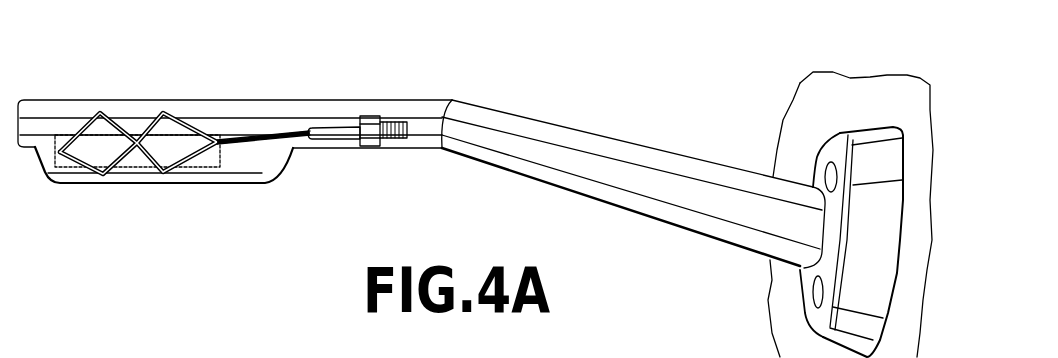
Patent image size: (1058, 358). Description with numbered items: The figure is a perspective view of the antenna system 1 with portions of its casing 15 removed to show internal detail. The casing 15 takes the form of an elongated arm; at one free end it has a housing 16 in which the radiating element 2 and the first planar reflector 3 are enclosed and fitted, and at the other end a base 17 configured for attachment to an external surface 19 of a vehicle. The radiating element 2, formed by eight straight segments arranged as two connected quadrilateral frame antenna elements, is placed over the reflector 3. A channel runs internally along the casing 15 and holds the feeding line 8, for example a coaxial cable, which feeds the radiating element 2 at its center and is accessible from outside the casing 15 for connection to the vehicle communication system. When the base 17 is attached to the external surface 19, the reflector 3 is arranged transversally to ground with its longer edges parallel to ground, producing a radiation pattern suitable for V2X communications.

The antenna system 1 is at (277, 229).
The radiating element 2 is at (100, 112).
The first planar reflector 3 is at (97, 150).
The feeding line 8 is at (284, 130).
The casing 15 is at (635, 153).
The housing 16 is at (217, 110).
The base 17 is at (807, 292).
The external surface 19 is at (817, 108).